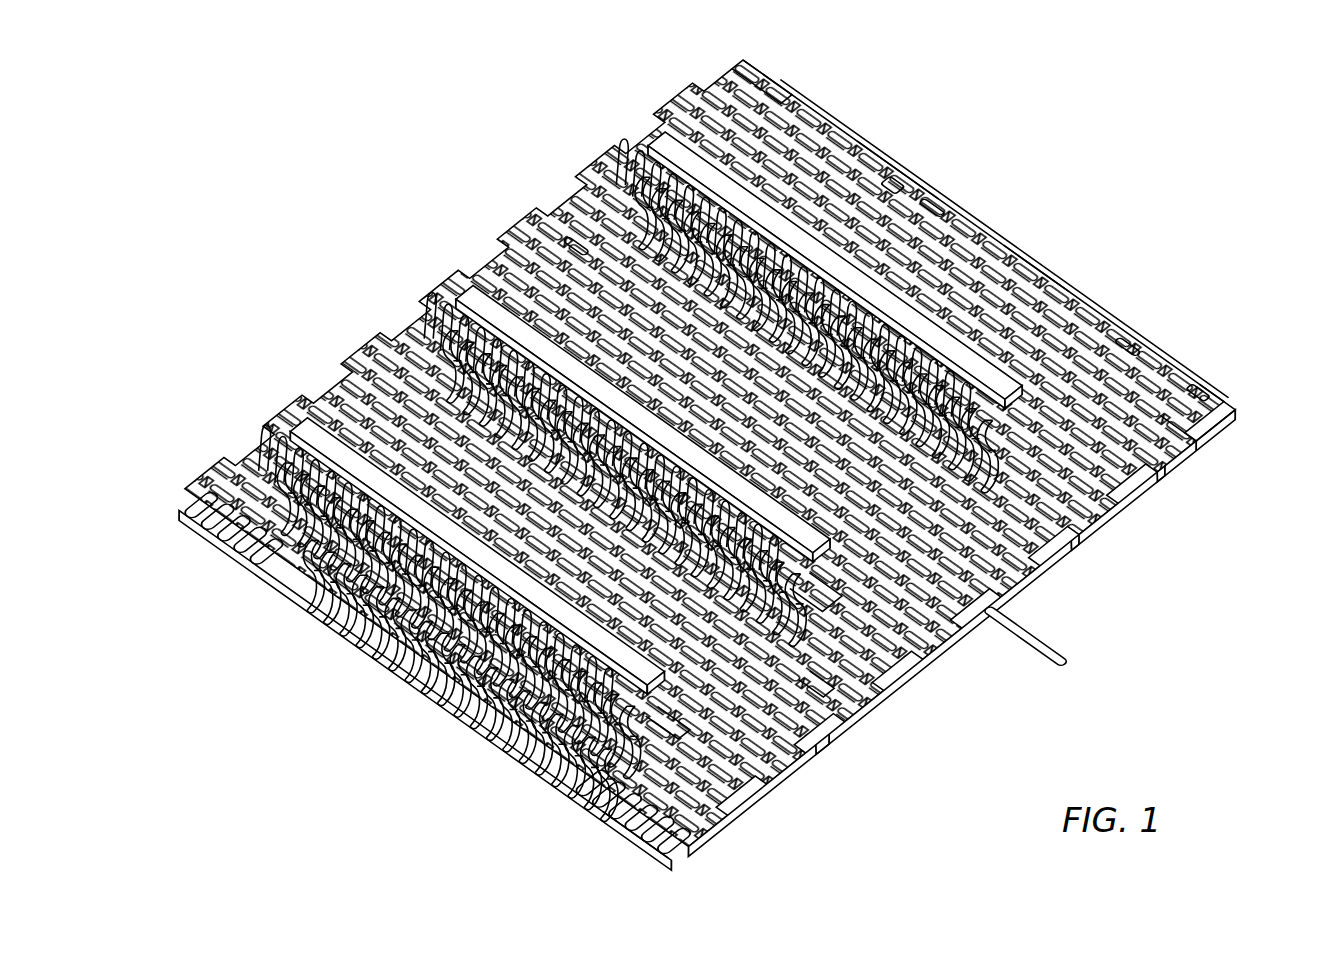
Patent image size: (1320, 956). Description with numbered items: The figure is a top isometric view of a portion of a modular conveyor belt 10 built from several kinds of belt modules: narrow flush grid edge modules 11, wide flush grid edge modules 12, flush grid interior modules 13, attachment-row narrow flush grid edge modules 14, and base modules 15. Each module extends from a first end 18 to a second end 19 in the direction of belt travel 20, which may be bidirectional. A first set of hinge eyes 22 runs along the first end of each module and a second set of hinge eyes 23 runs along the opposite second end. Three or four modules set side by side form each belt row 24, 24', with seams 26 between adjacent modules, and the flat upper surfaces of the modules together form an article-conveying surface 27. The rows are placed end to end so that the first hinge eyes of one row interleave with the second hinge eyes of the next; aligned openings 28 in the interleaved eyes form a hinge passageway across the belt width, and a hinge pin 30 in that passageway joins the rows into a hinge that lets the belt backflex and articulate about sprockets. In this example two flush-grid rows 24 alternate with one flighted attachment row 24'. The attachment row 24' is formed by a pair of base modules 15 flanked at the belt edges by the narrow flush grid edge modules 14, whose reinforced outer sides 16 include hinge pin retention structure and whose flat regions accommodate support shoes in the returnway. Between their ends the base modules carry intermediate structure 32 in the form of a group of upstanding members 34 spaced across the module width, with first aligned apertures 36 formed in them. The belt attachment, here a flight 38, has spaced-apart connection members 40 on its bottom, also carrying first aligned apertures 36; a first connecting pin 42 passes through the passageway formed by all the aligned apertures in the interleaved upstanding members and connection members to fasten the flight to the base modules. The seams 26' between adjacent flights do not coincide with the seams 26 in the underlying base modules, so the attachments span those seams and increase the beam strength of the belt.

The modular conveyor belt 10 is at (440, 124).
The narrow flush grid edge module 11 is at (1197, 388).
The wide flush grid edge module 12 is at (868, 152).
The flush grid interior module 13 is at (1030, 262).
The attachment-row narrow flush grid edge module 14 is at (240, 560).
The base module 15 is at (403, 677).
The reinforced outer side 16 is at (817, 740).
The first end 18 is at (748, 70).
The second end 19 is at (1153, 465).
The direction of belt travel 20 is at (466, 194).
The first set of hinge eyes 22 is at (894, 185).
The second set of hinge eyes 23 is at (470, 722).
The flush-grid belt row 24 is at (1212, 451).
The flighted attachment row 24' is at (678, 835).
The seam 26 is at (683, 505).
The seam between belt attachments 26' is at (458, 592).
The article-conveying surface 27 is at (575, 250).
The aligned openings 28 is at (1195, 390).
The hinge pin 30 is at (1055, 648).
The intermediate structure 32 is at (420, 342).
The upstanding members 34 is at (817, 683).
The first aligned apertures 36 is at (680, 730).
The flight 38 is at (660, 148).
The connection members 40 is at (1058, 525).
The first connecting pin 42 is at (833, 600).